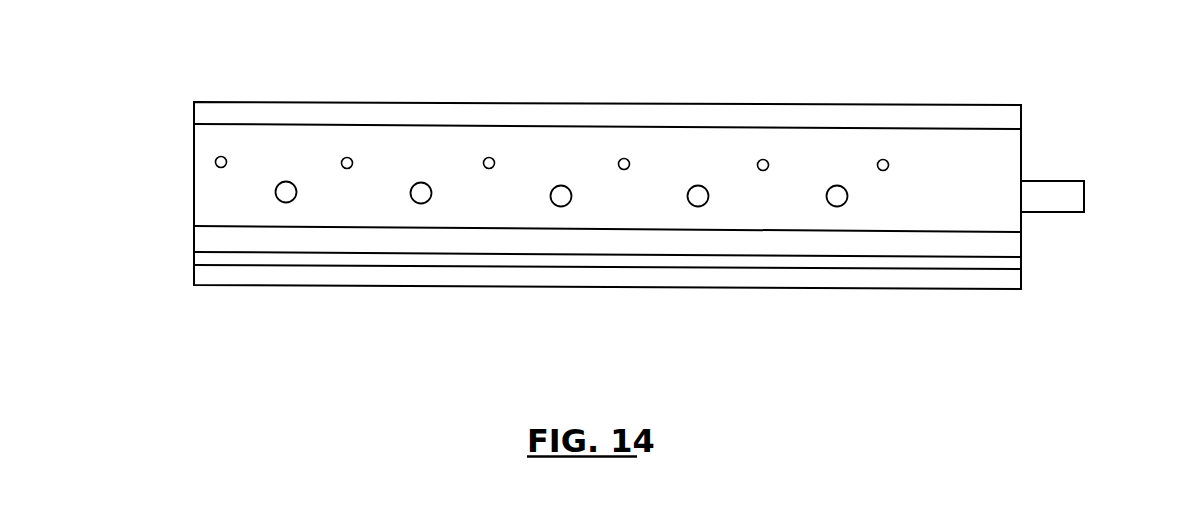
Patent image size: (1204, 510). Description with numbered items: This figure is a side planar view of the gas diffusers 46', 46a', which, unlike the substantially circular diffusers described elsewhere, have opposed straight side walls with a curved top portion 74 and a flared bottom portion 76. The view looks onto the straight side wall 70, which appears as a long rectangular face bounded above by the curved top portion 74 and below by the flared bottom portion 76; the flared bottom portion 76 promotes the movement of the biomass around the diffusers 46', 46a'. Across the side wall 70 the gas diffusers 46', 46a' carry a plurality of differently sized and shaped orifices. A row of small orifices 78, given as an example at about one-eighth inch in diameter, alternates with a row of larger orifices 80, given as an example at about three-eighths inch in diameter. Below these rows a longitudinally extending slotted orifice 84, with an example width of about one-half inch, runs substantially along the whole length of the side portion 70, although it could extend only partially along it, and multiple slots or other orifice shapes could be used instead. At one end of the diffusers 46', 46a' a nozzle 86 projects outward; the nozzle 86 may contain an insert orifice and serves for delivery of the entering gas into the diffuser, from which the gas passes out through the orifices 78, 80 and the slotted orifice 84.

The gas diffuser 46' is at (614, 167).
The gas diffuser 46a' is at (614, 167).
The straight side wall 70 is at (219, 207).
The curved top portion 74 is at (221, 113).
The flared bottom portion 76 is at (208, 274).
The small orifices 78 is at (490, 157).
The larger orifices 80 is at (412, 187).
The slotted orifice 84 is at (997, 242).
The nozzle 86 is at (1062, 182).